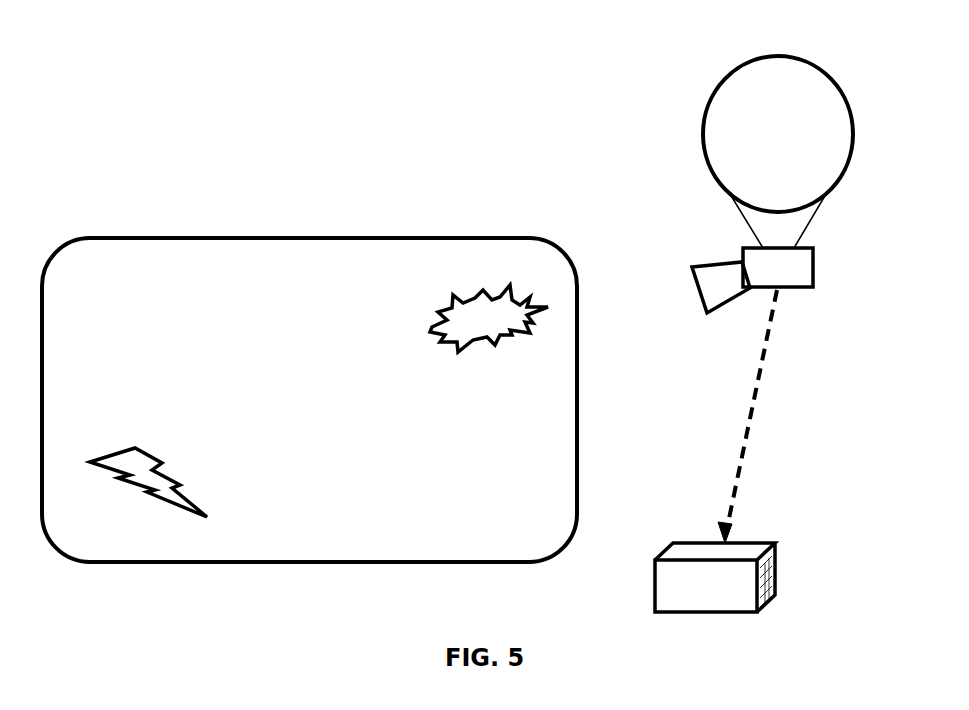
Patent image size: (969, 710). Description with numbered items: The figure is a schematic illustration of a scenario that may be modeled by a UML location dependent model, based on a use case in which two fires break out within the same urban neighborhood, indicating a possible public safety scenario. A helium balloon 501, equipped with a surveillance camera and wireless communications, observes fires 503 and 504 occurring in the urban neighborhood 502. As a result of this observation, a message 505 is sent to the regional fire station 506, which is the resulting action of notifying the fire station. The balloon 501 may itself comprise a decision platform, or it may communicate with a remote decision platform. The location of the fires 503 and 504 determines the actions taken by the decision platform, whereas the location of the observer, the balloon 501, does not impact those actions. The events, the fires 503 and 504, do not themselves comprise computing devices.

The helium balloon 501 is at (703, 134).
The urban neighborhood 502 is at (318, 222).
The fire 503 is at (432, 321).
The fire 504 is at (188, 447).
The message 505 is at (745, 430).
The regional fire station 506 is at (665, 536).